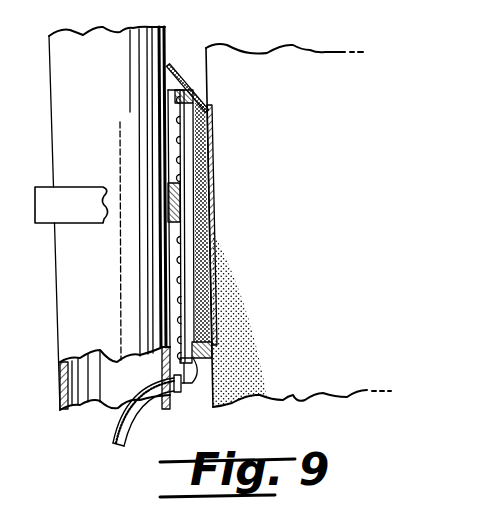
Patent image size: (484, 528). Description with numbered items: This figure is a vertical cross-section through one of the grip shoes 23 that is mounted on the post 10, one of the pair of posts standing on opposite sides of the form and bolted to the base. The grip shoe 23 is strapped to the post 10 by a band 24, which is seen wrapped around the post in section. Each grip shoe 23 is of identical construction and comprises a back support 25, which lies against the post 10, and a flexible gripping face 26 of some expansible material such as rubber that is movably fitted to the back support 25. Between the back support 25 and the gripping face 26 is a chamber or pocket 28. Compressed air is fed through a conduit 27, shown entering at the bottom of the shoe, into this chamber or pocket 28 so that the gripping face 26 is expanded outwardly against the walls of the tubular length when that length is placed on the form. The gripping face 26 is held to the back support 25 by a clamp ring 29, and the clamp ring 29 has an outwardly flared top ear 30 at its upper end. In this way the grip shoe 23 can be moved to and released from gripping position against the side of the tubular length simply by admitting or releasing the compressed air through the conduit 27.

The post 10 is at (66, 104).
The grip shoe 23 is at (211, 133).
The band 24 is at (53, 210).
The back support 25 is at (178, 112).
The flexible gripping face 26 is at (215, 158).
The conduit 27 is at (115, 432).
The chamber or pocket 28 is at (194, 210).
The clamp ring 29 is at (212, 343).
The outwardly flared top ear 30 is at (183, 66).